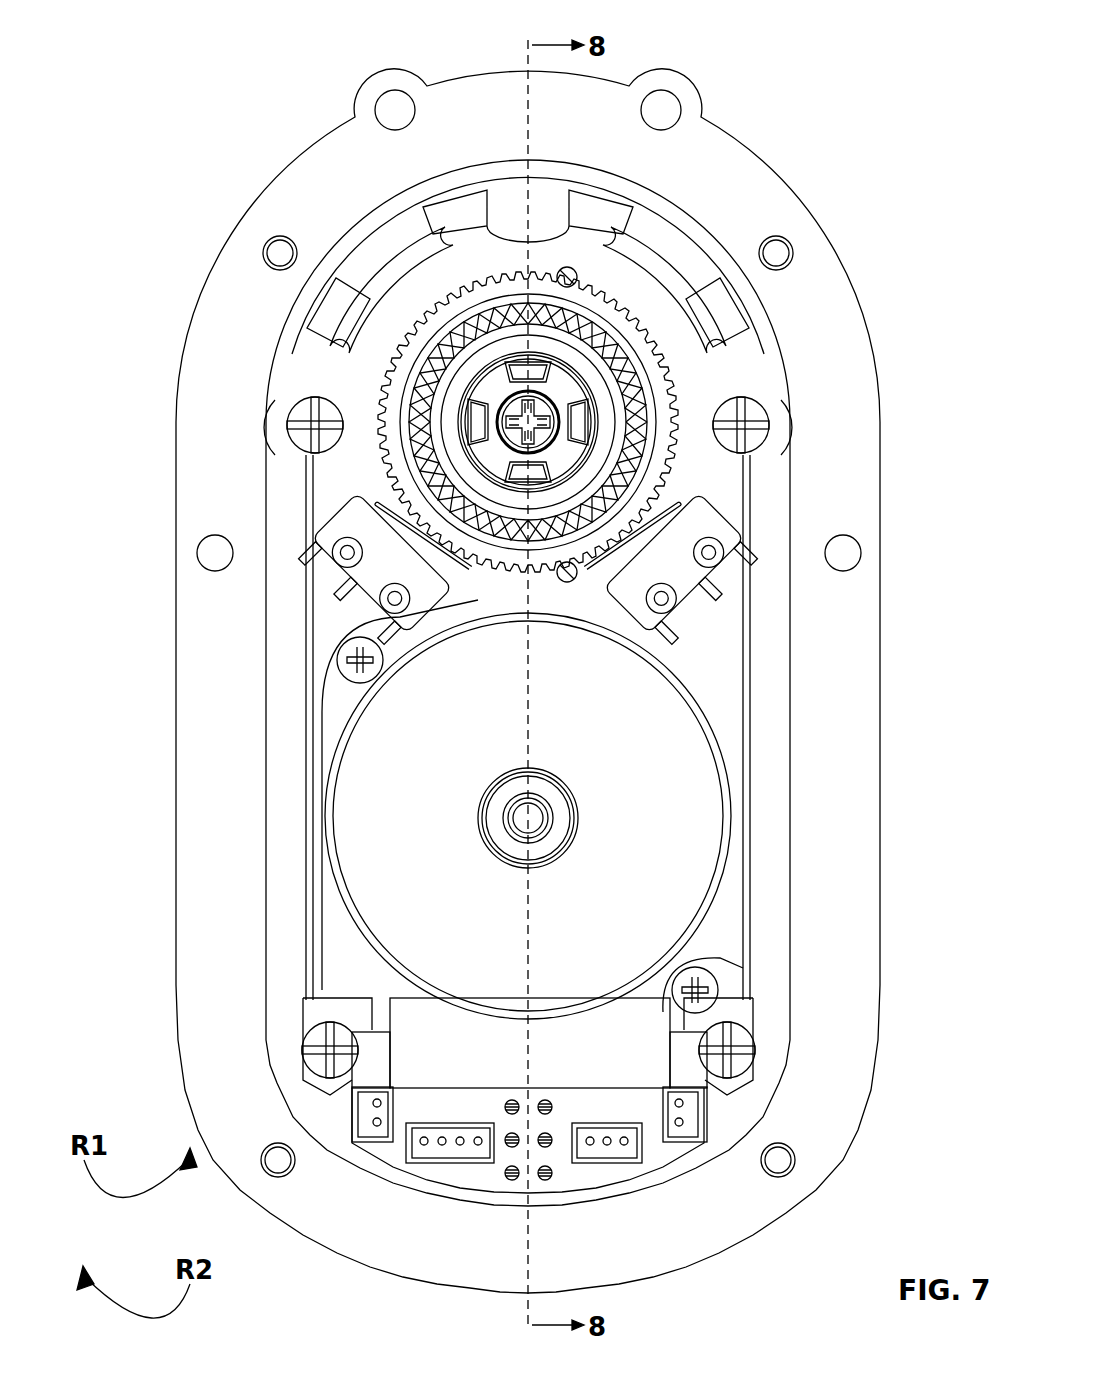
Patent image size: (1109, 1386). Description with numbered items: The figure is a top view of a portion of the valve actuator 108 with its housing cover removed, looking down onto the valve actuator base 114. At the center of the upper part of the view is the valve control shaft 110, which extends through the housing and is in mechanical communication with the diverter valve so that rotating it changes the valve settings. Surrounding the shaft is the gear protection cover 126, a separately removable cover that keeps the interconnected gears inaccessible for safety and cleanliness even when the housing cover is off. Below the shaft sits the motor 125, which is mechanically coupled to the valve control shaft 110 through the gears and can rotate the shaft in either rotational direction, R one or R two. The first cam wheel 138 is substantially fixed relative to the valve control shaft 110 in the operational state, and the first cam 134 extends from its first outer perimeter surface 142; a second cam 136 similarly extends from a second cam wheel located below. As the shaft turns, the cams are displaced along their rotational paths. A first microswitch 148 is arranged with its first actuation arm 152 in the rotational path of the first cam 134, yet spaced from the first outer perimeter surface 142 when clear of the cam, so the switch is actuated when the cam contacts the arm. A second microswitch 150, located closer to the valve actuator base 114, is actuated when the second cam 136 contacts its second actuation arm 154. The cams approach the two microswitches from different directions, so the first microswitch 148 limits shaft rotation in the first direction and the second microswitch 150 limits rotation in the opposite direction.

The valve actuator 108 is at (846, 58).
The valve control shaft 110 is at (552, 398).
The valve actuator base 114 is at (843, 662).
The motor 125 is at (660, 885).
The gear protection cover 126 is at (400, 313).
The first cam 134 is at (565, 585).
The second cam 136 is at (567, 277).
The first cam wheel 138 is at (650, 395).
The first outer perimeter surface 142 is at (370, 382).
The first microswitch 148 is at (733, 542).
The second microswitch 150 is at (340, 586).
The first actuation arm 152 is at (720, 477).
The second actuation arm 154 is at (368, 473).